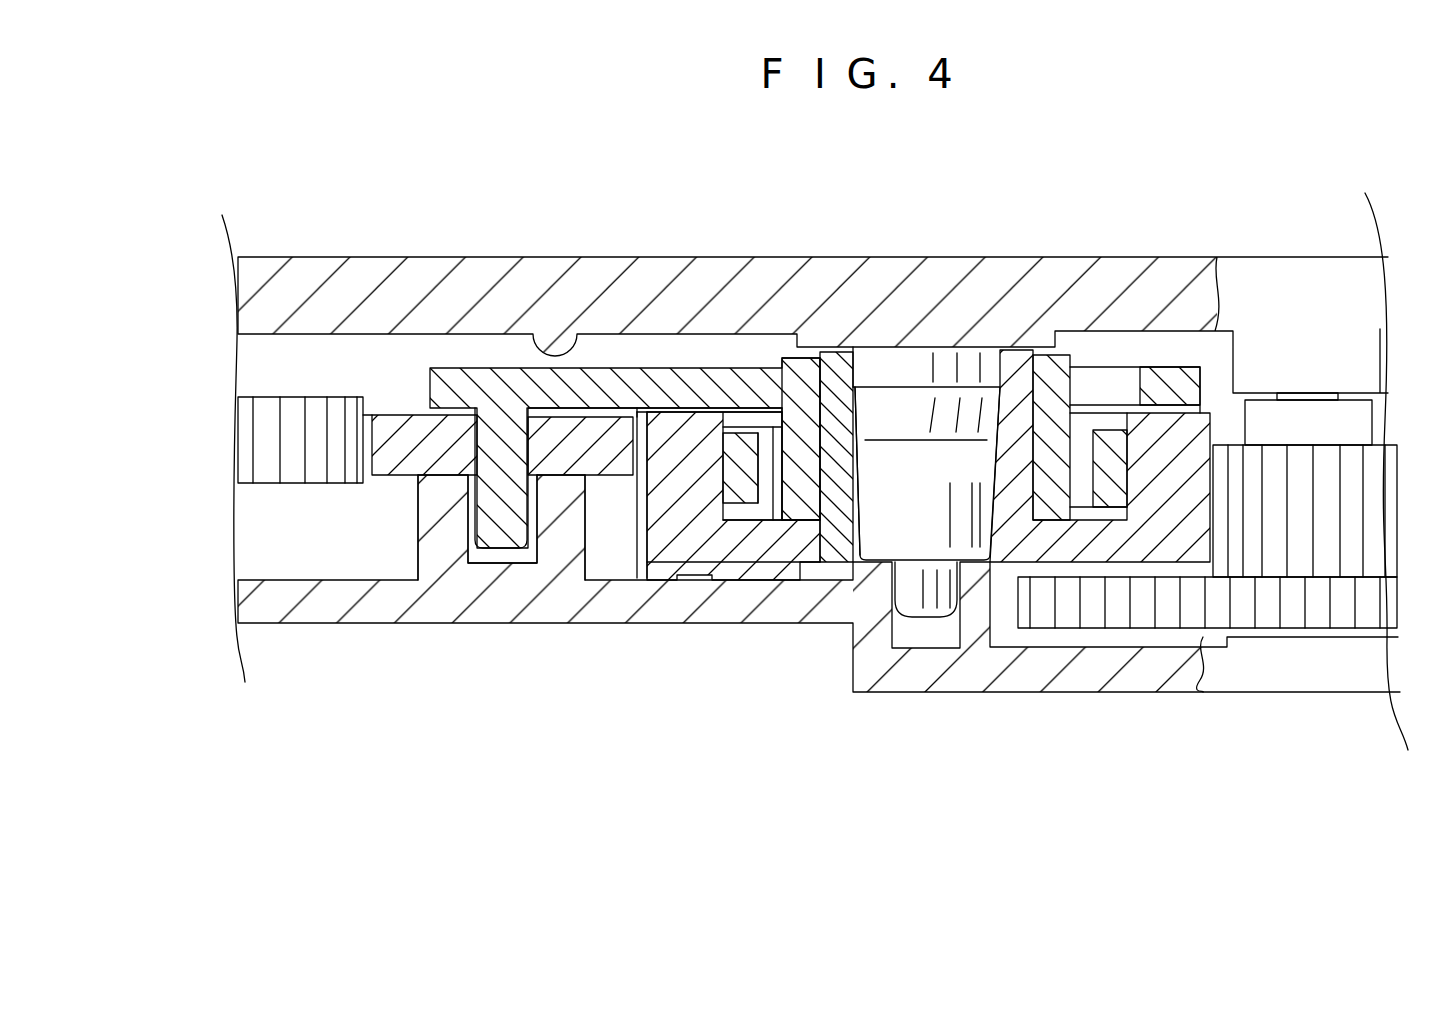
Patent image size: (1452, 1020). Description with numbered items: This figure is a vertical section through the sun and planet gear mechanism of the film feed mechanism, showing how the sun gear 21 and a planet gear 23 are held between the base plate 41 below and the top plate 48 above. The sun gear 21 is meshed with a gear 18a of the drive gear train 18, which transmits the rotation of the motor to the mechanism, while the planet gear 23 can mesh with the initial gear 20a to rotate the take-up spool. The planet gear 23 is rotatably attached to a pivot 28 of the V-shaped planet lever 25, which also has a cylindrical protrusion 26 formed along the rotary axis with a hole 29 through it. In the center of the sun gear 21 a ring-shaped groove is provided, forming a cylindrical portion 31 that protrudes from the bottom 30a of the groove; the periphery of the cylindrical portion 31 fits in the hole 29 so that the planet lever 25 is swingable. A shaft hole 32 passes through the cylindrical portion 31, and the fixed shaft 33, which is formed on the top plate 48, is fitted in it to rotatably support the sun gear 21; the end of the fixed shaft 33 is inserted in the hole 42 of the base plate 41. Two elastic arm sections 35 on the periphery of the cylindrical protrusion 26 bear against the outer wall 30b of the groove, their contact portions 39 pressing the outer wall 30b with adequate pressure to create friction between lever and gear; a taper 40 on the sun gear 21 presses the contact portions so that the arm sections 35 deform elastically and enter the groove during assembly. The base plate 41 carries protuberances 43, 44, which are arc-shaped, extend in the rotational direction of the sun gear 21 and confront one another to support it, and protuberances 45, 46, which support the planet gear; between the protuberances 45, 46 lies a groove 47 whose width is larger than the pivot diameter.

The drive gear train 18 is at (1400, 612).
The gear 18a is at (1372, 510).
The initial gear 20a is at (242, 428).
The sun gear 21 is at (765, 590).
The planet gear 23 is at (392, 402).
The planet lever 25 is at (656, 352).
The cylindrical protrusion 26 is at (800, 440).
The pivot 28 is at (494, 537).
The hole 29 is at (797, 450).
The bottom of the groove 30a is at (740, 522).
The outer wall of the groove 30b is at (1115, 430).
The cylindrical portion 31 is at (842, 487).
The shaft hole 32 is at (853, 380).
The fixed shaft 33 is at (956, 450).
The elastic arm section 35 is at (700, 486).
The contact portion 39 is at (1135, 468).
The taper 40 is at (722, 420).
The base plate 41 is at (1042, 692).
The hole 42 is at (930, 630).
The protuberance 43 is at (690, 562).
The protuberance 44 is at (820, 580).
The protuberance 45 is at (441, 483).
The protuberance 46 is at (560, 553).
The groove 47 is at (524, 565).
The top plate 48 is at (508, 262).